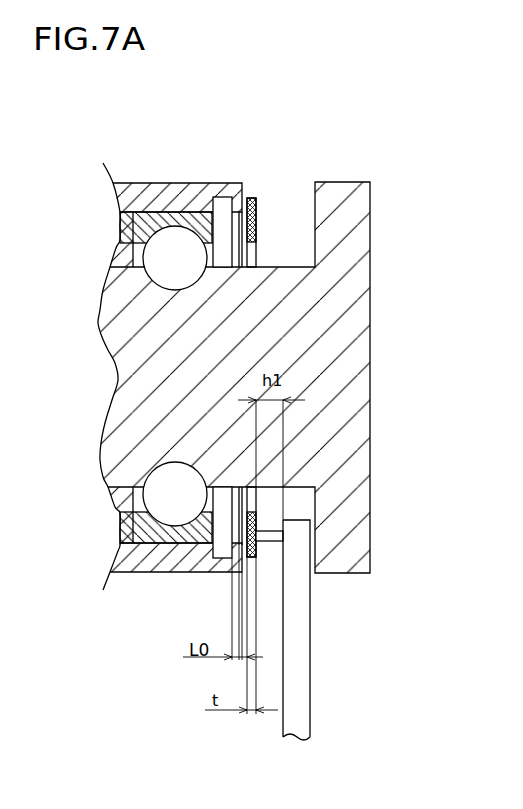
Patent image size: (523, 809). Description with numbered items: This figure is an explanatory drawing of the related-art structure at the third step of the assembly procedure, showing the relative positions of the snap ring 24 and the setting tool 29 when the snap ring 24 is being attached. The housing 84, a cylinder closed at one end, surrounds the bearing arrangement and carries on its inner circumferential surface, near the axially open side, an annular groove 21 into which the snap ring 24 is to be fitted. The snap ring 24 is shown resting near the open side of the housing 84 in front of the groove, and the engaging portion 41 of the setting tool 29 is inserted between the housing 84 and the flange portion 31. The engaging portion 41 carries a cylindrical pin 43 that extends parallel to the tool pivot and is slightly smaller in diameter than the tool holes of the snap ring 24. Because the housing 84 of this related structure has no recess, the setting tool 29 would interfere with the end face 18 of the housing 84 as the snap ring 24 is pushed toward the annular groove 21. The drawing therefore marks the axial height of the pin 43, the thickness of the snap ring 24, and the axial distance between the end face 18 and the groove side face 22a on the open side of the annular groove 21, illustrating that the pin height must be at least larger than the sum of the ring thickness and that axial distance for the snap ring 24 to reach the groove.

The housing 84 is at (146, 183).
The end face 18 is at (245, 195).
The snap ring 24 is at (256, 213).
The flange portion 31 is at (360, 182).
The annular groove 21 is at (166, 438).
The groove side face 22a is at (212, 546).
The pin 43 is at (269, 541).
The engaging portion 41 is at (310, 678).
The setting tool 29 is at (359, 630).